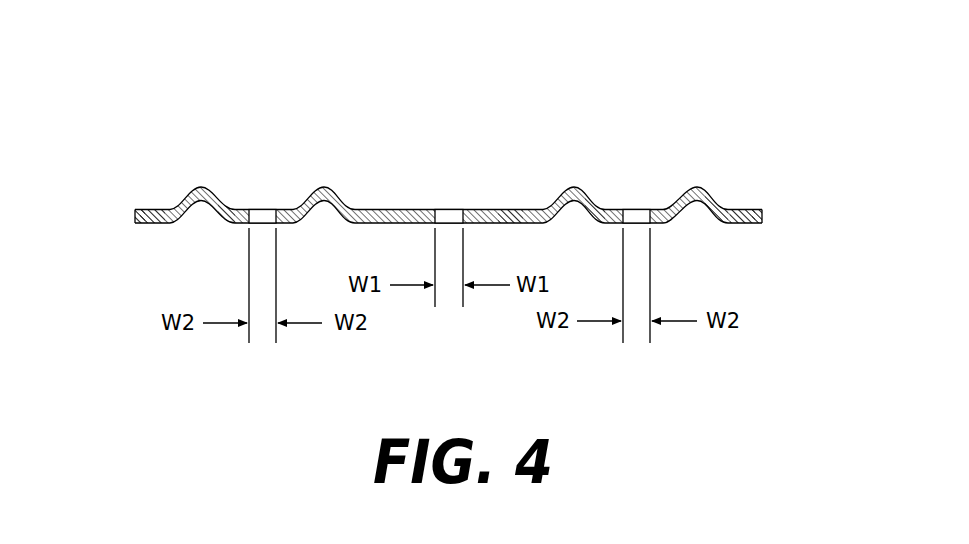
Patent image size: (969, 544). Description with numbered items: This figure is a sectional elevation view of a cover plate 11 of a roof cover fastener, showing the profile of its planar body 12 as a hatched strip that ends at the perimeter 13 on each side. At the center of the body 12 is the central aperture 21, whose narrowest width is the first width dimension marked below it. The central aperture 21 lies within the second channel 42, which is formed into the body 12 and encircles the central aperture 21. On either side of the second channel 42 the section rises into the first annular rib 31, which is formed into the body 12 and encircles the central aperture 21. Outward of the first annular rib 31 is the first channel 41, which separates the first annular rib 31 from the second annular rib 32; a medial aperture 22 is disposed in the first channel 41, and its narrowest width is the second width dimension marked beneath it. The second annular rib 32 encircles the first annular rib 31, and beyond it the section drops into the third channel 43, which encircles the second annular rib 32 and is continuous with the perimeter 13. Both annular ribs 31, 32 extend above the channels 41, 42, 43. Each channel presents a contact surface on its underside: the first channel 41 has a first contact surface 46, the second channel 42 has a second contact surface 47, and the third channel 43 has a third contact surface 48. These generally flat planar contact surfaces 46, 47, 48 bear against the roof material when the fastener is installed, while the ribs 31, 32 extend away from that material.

The cover plate 11 is at (140, 92).
The planar body 12 is at (712, 200).
The perimeter 13 is at (135, 213).
The central aperture 21 is at (446, 208).
The medial aperture 22 is at (273, 207).
The first annular rib 31 is at (323, 190).
The second annular rib 32 is at (217, 197).
The first channel 41 is at (242, 205).
The second channel 42 is at (390, 208).
The third channel 43 is at (143, 208).
The first contact surface 46 is at (283, 228).
The second contact surface 47 is at (510, 228).
The third contact surface 48 is at (153, 228).